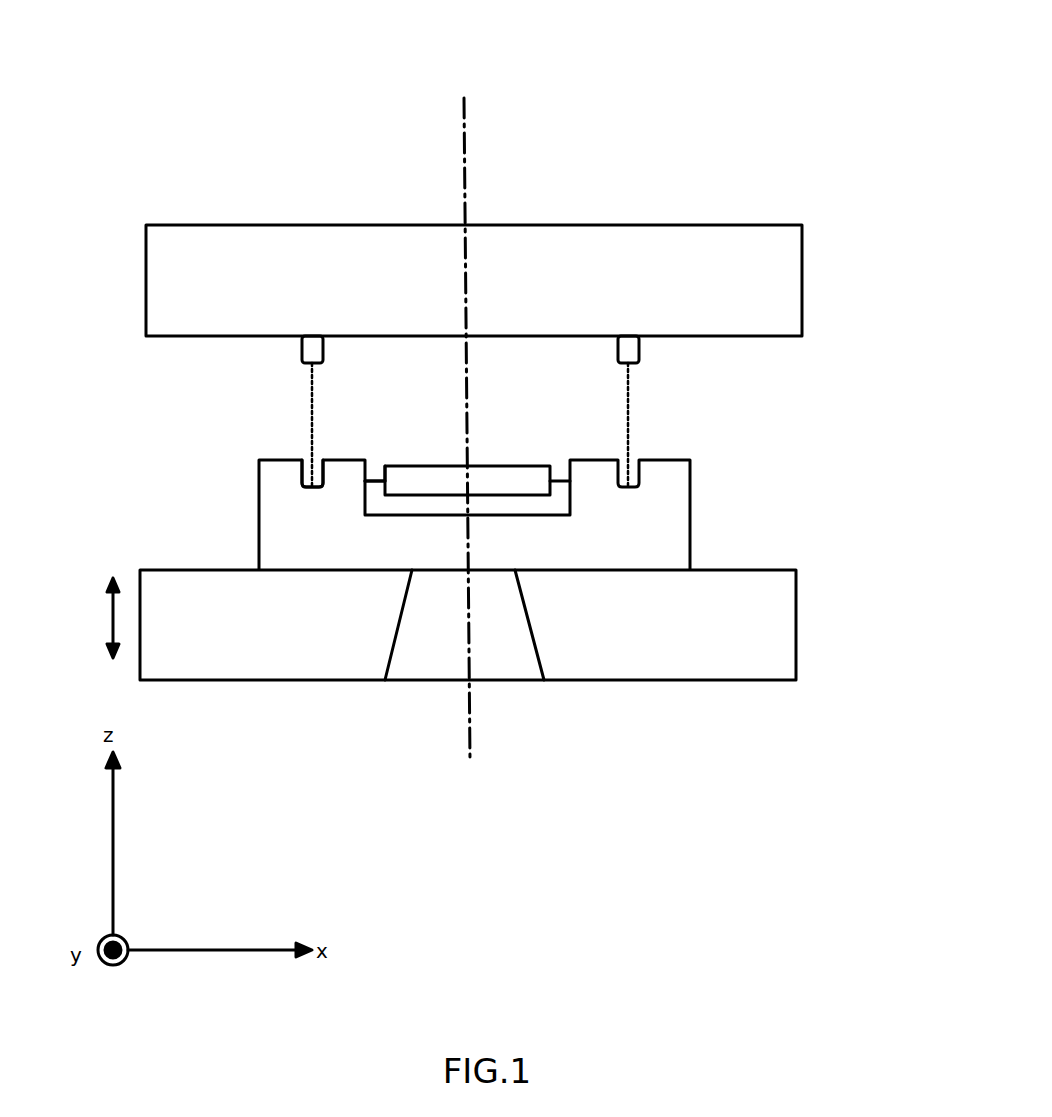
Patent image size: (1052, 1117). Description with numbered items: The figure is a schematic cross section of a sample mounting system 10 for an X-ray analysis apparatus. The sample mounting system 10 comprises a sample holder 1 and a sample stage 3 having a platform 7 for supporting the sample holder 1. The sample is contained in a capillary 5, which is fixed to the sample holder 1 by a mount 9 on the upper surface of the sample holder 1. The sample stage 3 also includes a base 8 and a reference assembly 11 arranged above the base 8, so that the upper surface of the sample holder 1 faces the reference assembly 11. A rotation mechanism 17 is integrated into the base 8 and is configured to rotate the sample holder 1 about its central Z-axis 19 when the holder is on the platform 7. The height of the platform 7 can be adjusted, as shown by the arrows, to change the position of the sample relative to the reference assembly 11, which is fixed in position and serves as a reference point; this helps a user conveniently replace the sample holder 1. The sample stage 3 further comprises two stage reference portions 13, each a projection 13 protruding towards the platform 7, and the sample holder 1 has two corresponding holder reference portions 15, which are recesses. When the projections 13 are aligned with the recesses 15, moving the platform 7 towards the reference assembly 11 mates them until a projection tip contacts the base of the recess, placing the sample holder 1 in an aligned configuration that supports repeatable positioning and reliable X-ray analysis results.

The sample holder 1 is at (462, 461).
The sample stage 3 is at (421, 282).
The capillary 5 is at (548, 466).
The platform 7 is at (512, 689).
The base 8 is at (808, 654).
The mount 9 is at (377, 477).
The sample mounting system 10 is at (494, 459).
The reference assembly 11 is at (610, 227).
The stage reference portion 13 is at (302, 347).
The holder reference portion 15 is at (302, 475).
The rotation mechanism 17 is at (510, 680).
The Z-axis 19 is at (464, 143).